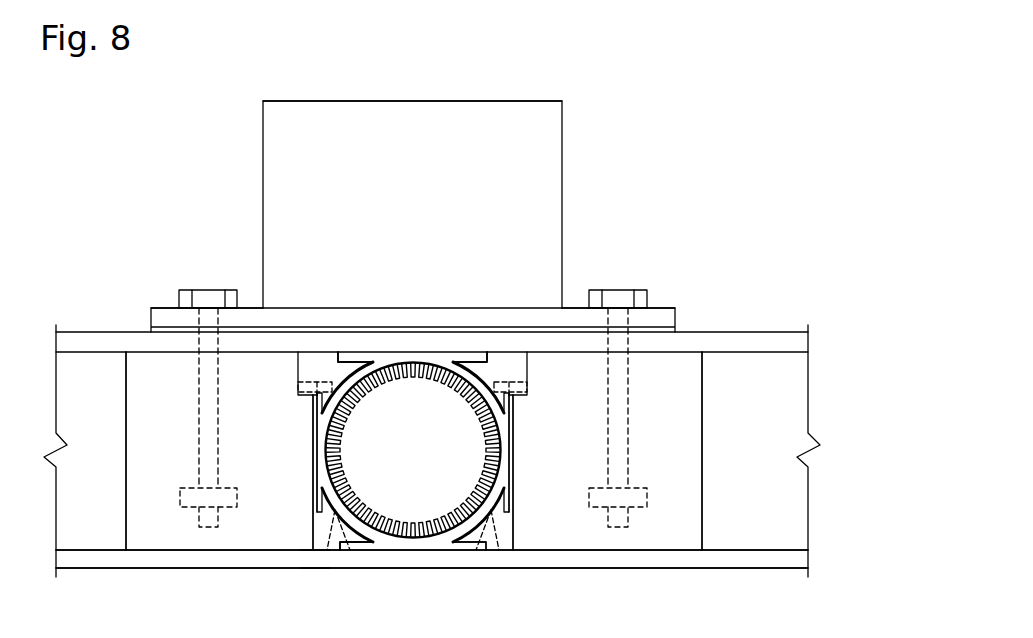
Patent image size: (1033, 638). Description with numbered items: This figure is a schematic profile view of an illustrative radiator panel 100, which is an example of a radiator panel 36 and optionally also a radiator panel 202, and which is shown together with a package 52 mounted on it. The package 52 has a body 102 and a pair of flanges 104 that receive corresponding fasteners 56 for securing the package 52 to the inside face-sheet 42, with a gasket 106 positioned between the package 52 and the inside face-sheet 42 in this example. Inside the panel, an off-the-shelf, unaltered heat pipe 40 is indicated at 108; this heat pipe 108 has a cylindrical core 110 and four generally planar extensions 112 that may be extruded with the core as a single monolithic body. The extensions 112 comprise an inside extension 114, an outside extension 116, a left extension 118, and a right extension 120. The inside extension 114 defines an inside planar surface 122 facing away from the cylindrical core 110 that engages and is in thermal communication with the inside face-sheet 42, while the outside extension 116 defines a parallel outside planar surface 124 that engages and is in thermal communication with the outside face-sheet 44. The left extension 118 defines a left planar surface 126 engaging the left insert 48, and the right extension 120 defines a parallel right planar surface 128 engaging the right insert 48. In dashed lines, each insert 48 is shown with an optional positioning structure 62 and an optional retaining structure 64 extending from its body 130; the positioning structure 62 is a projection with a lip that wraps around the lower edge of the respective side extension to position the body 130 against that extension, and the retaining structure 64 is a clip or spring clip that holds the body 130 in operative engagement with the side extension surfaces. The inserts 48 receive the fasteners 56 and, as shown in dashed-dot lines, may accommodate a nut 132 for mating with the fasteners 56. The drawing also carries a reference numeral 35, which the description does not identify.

The aircraft 35 is at (770, 43).
The radiator panel 202 is at (718, 68).
The radiator panel 100 is at (645, 100).
The radiator panel 36 is at (723, 104).
The package 52 is at (460, 98).
The body 102 is at (563, 152).
The flanges 104 is at (168, 307).
The fasteners 56 is at (206, 289).
The gasket 106 is at (150, 331).
The inside face-sheet 42 is at (726, 331).
The retaining structure 64 is at (315, 382).
The cylindrical core 110 is at (346, 386).
The inside extension 114 is at (372, 349).
The inside planar surface 122 is at (396, 351).
The extensions 112 is at (439, 349).
The inserts 48 is at (124, 429).
The right extension 120 is at (518, 413).
The nut 132 is at (185, 486).
The left planar surface 126 is at (311, 455).
The right planar surface 128 is at (516, 455).
The left extension 118 is at (310, 487).
The body 130 is at (125, 502).
The heat pipe 40 is at (310, 560).
The heat pipe 108 is at (332, 552).
The positioning structure 62 is at (349, 545).
The outside planar surface 124 is at (400, 552).
The outside extension 116 is at (440, 556).
The outside face-sheet 44 is at (722, 568).